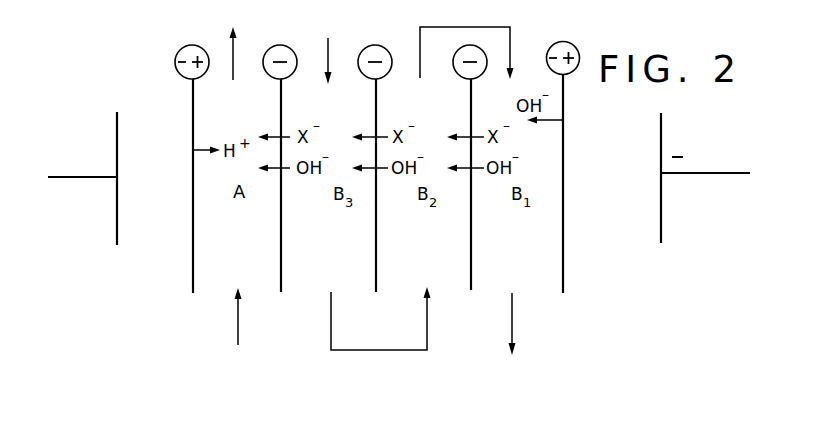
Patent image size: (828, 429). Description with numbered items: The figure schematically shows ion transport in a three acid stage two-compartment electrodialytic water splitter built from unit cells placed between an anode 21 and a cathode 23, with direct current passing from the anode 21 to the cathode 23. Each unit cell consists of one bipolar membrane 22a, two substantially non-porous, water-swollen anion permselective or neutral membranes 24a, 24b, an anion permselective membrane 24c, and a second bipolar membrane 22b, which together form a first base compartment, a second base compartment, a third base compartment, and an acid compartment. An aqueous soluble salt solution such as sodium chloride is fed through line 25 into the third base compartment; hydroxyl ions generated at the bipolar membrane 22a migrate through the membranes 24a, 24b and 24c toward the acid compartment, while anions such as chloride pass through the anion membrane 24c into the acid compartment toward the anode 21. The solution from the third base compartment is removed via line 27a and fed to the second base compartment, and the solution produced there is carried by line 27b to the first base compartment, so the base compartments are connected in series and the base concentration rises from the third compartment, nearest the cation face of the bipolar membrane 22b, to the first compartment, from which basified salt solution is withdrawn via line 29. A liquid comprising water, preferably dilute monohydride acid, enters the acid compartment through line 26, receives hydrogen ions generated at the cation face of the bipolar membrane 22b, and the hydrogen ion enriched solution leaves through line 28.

The anode 21 is at (97, 178).
The bipolar membrane 22a is at (563, 267).
The bipolar membrane 22b is at (193, 268).
The cathode 23 is at (730, 178).
The non-cation permselective membrane 24a is at (471, 268).
The non-cation permselective membrane 24b is at (376, 265).
The anion permselective membrane 24c is at (281, 265).
The line 25 is at (323, 55).
The line 26 is at (238, 325).
The line 27a is at (412, 350).
The line 27b is at (487, 27).
The line 28 is at (233, 55).
The line 29 is at (512, 325).